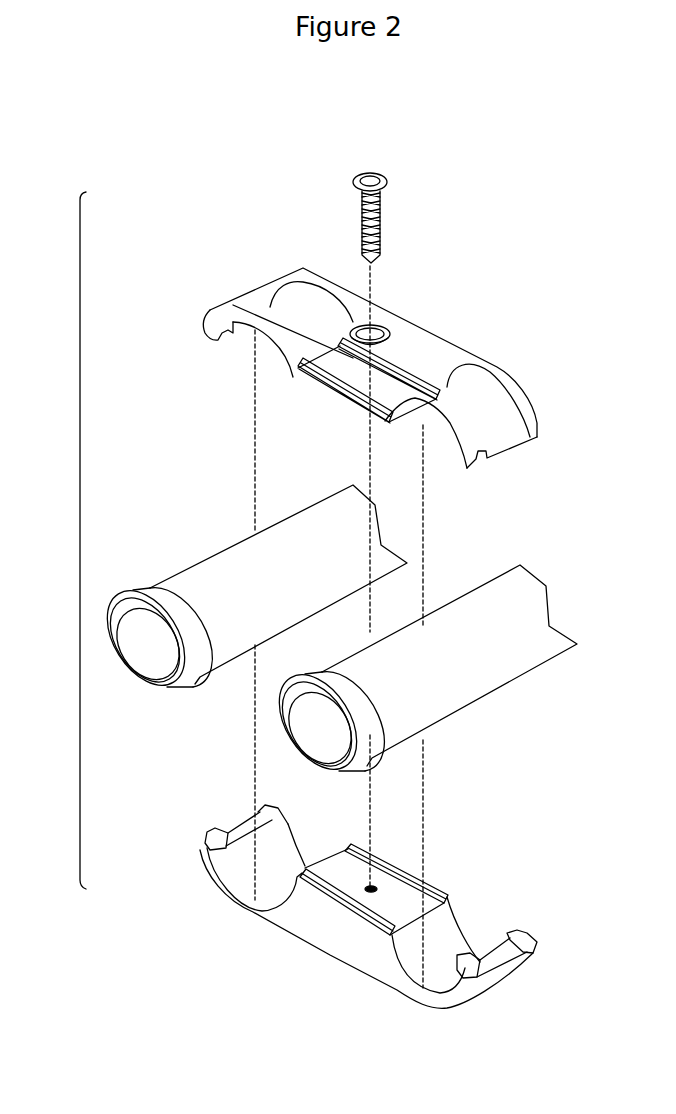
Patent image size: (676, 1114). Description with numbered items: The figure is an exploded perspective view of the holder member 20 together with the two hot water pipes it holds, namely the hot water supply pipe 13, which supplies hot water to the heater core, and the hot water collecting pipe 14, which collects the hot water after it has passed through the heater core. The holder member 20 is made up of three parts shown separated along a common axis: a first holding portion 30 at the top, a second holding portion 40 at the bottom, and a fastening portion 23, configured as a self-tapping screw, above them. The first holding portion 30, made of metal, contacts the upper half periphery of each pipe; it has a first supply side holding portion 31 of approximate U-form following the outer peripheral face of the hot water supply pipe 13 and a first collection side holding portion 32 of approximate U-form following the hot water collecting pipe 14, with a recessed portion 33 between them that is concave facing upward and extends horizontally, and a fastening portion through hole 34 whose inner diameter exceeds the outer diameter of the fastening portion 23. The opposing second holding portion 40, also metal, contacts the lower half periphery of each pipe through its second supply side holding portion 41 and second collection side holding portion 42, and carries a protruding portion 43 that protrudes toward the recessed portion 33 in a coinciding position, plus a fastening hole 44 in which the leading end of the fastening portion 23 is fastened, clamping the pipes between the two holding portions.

The hot water supply pipe 13 is at (513, 680).
The hot water collecting pipe 14 is at (207, 560).
The holder member 20 is at (79, 507).
The fastening portion 23 is at (355, 176).
The first holding portion 30 is at (316, 392).
The first supply side holding portion 31 is at (462, 455).
The first collection side holding portion 32 is at (283, 355).
The recessed portion 33 is at (440, 338).
The fastening portion through hole 34 is at (376, 332).
The second holding portion 40 is at (316, 902).
The second supply side holding portion 41 is at (460, 940).
The second collection side holding portion 42 is at (295, 852).
The protruding portion 43 is at (357, 907).
The fastening hole 44 is at (374, 885).